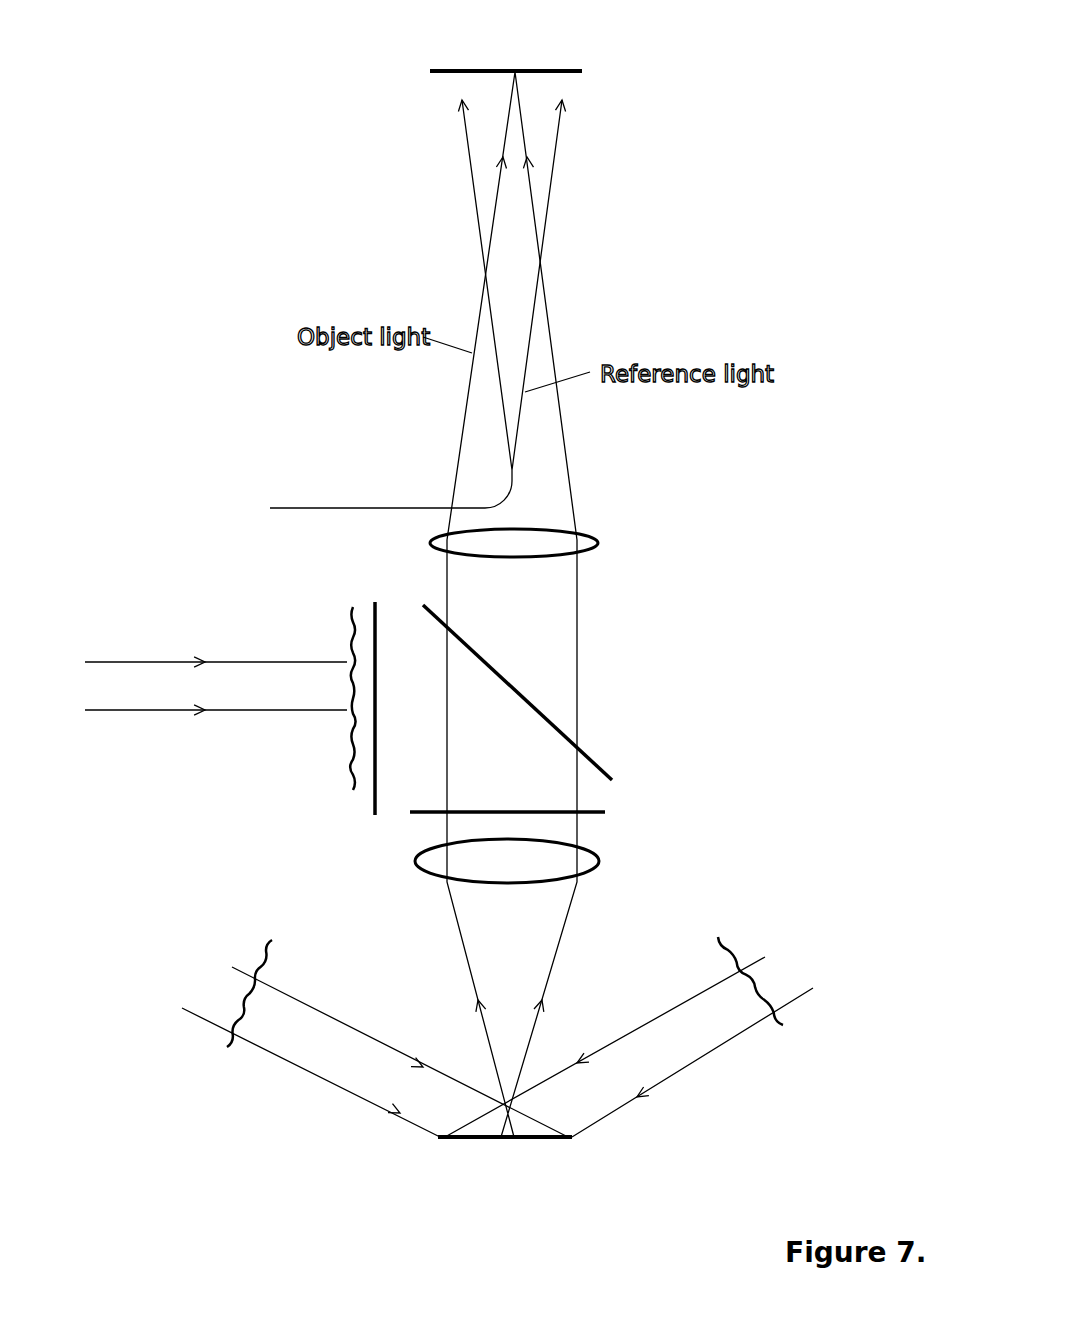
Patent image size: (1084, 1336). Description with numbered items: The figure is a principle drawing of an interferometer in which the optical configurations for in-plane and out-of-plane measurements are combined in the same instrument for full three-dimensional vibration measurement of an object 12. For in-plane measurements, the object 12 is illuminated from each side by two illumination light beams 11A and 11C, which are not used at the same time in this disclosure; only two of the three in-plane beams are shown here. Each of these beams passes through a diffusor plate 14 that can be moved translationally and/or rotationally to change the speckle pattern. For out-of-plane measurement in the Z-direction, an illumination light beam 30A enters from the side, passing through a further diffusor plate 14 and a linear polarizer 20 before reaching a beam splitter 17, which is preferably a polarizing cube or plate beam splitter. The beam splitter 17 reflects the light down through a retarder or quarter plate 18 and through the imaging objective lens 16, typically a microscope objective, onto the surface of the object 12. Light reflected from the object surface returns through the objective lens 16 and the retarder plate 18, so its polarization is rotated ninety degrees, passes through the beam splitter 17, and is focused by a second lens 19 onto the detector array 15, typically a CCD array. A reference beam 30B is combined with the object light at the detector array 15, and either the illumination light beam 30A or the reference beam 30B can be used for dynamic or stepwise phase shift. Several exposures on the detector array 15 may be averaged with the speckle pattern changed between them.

The detector array 15 is at (445, 70).
The reference beam 30B is at (295, 505).
The second lens 19 is at (598, 540).
The linear polarizer 20 is at (375, 602).
The diffusor plate 14 is at (352, 612).
The illumination light beam 30A is at (243, 683).
The beam splitter 17 is at (543, 715).
The retarder plate 18 is at (605, 811).
The imaging objective lens 16 is at (600, 862).
The illumination light beam 11A is at (323, 1022).
The illumination light beam 11C is at (680, 1013).
The object 12 is at (562, 1140).